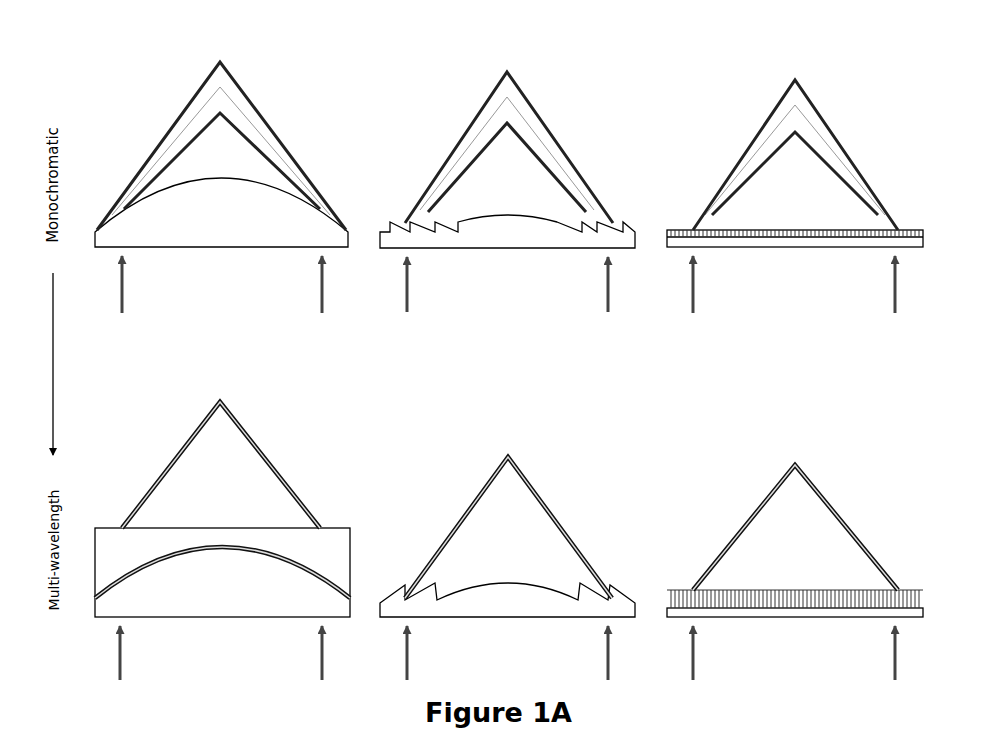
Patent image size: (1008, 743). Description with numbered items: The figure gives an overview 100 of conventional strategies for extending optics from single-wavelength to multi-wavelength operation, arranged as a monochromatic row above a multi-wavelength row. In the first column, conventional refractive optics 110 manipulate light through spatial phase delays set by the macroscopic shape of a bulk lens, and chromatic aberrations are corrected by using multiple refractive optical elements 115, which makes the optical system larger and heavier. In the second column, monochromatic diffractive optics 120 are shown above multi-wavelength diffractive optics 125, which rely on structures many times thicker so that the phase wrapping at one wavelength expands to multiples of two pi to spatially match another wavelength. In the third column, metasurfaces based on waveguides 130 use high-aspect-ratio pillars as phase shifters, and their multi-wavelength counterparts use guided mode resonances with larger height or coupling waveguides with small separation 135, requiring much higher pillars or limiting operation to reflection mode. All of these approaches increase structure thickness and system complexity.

The flat lens technologies overview 100 is at (494, 345).
The conventional refractive optics 110 is at (131, 55).
The monochromatic diffractive optics 120 is at (436, 56).
The metasurfaces based on waveguides 130 is at (730, 55).
The multiple refractive optical elements 115 is at (116, 390).
The multi-wavelength diffractive optics 125 is at (440, 403).
The guided mode resonances or coupling waveguides 135 is at (755, 410).